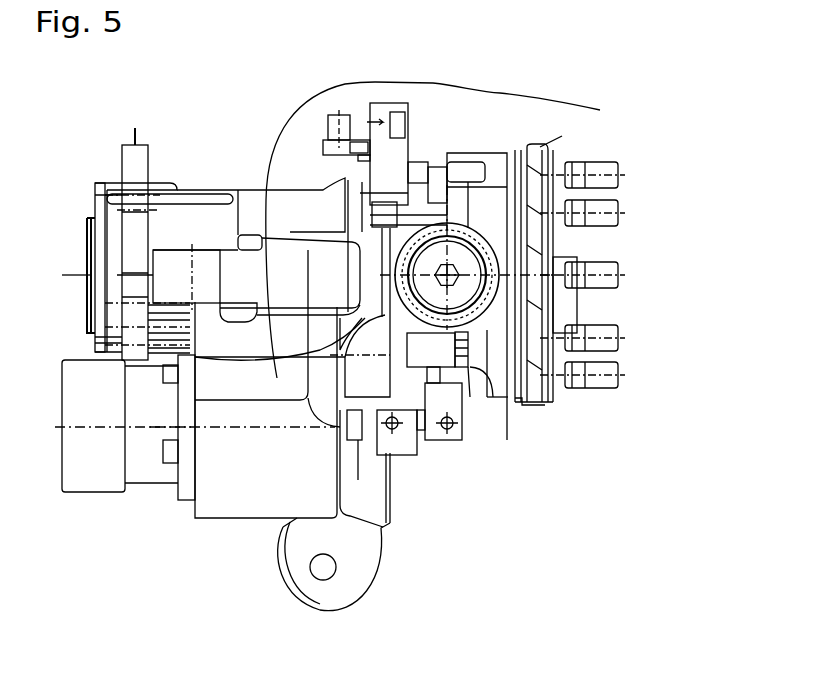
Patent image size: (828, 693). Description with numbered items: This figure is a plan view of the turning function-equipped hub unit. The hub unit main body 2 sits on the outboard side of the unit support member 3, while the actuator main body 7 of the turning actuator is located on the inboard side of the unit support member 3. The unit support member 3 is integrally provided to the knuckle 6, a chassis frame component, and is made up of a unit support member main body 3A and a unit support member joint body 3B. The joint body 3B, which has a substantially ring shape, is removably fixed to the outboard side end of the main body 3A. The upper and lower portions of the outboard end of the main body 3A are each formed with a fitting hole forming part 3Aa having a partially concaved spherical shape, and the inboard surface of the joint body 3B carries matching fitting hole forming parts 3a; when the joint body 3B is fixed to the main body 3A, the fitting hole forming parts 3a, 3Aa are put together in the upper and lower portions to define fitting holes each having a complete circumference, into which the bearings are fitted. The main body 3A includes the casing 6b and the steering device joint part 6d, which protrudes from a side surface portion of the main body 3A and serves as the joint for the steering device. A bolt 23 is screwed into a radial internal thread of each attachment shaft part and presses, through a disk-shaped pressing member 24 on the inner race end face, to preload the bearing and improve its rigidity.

The hub unit main body 2 is at (582, 410).
The unit support member 3 is at (680, 75).
The unit support member main body 3A is at (545, 100).
The unit support member joint body 3B is at (480, 228).
The fitting hole forming part 3a is at (476, 228).
The fitting hole forming part 3Aa is at (480, 372).
The knuckle 6 is at (242, 540).
The casing 6b is at (242, 476).
The steering device joint part 6d is at (353, 565).
The actuator main body 7 is at (73, 503).
The bolt 23 is at (495, 268).
The pressing member 24 is at (465, 292).